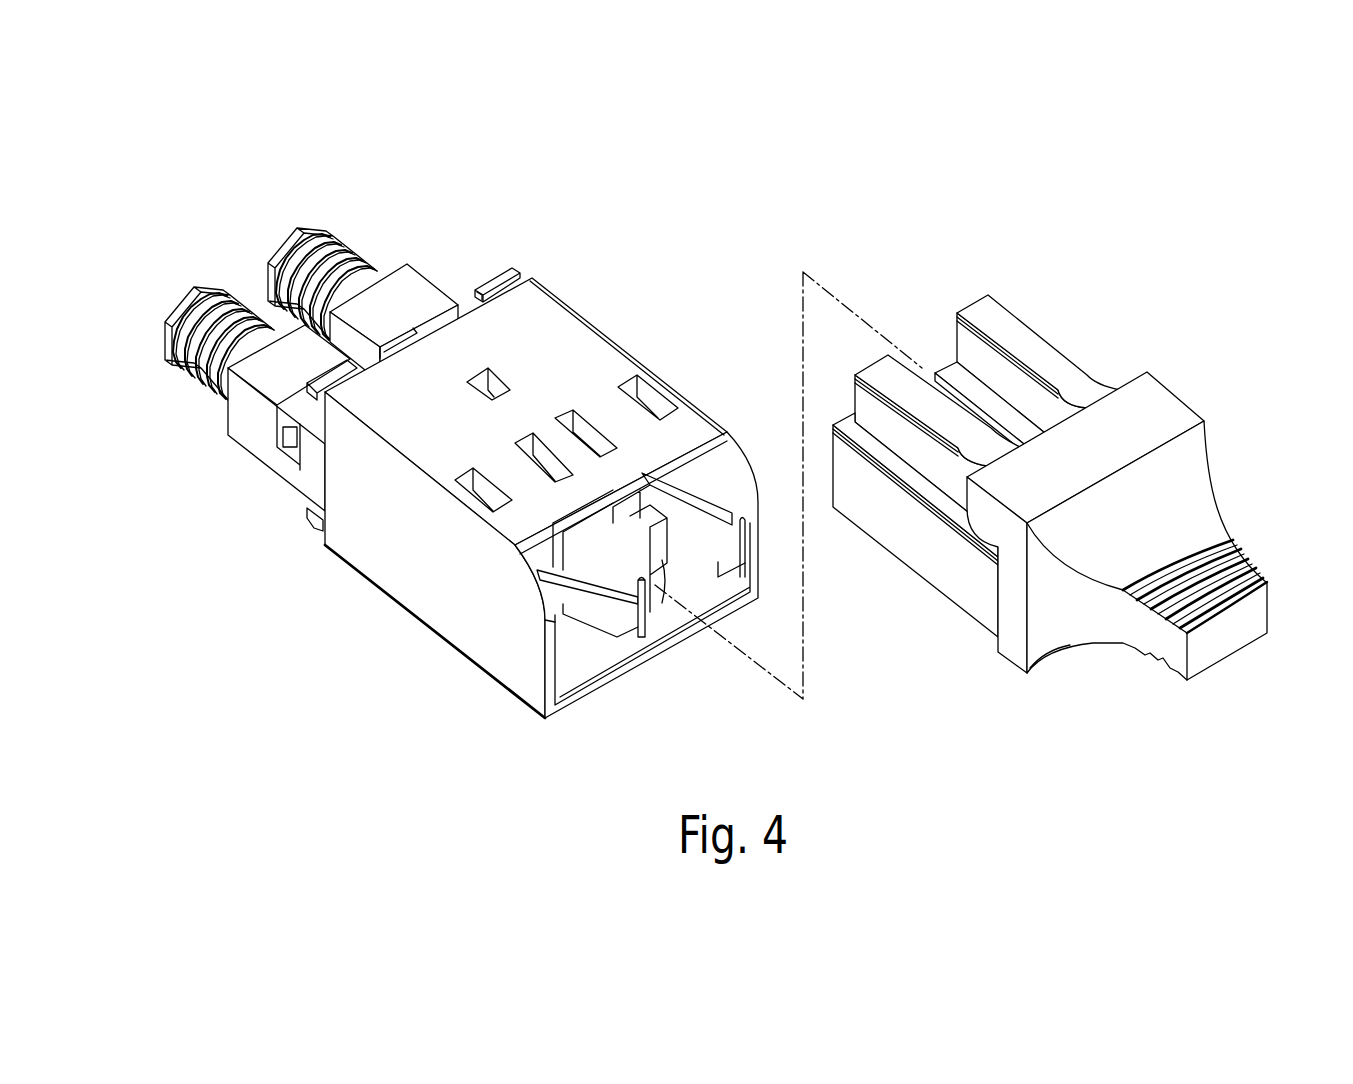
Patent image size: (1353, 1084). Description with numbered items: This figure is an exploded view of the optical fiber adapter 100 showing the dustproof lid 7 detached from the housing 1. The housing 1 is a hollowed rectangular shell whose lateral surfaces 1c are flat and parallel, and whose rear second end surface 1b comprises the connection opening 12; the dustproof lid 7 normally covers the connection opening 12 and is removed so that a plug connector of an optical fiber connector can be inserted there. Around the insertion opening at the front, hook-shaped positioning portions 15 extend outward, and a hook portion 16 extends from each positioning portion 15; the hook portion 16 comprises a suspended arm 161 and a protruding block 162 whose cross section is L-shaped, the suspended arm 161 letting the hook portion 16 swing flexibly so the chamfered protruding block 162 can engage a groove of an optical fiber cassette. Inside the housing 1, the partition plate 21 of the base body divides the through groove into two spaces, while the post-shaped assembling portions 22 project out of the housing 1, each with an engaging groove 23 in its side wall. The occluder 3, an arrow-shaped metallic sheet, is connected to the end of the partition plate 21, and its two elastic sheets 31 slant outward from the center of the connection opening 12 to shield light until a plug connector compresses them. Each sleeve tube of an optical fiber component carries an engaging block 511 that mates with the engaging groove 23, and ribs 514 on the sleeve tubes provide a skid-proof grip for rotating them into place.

The optical fiber adapter 100 is at (756, 169).
The housing 1 is at (510, 476).
The second end surface 1b is at (550, 655).
The lateral surfaces 1c is at (402, 547).
The connection opening 12 is at (573, 677).
The positioning portions 15 is at (483, 287).
The hook portion 16 is at (599, 305).
The suspended arm 161 is at (528, 277).
The protruding block 162 is at (513, 270).
The partition plate 21 is at (667, 613).
The assembling portions 22 is at (242, 412).
The engaging groove 23 is at (287, 423).
The occluder 3 is at (652, 610).
The elastic sheet 31 is at (583, 610).
The engaging block 511 is at (287, 443).
The ribs 514 is at (303, 247).
The dustproof lid 7 is at (1004, 594).